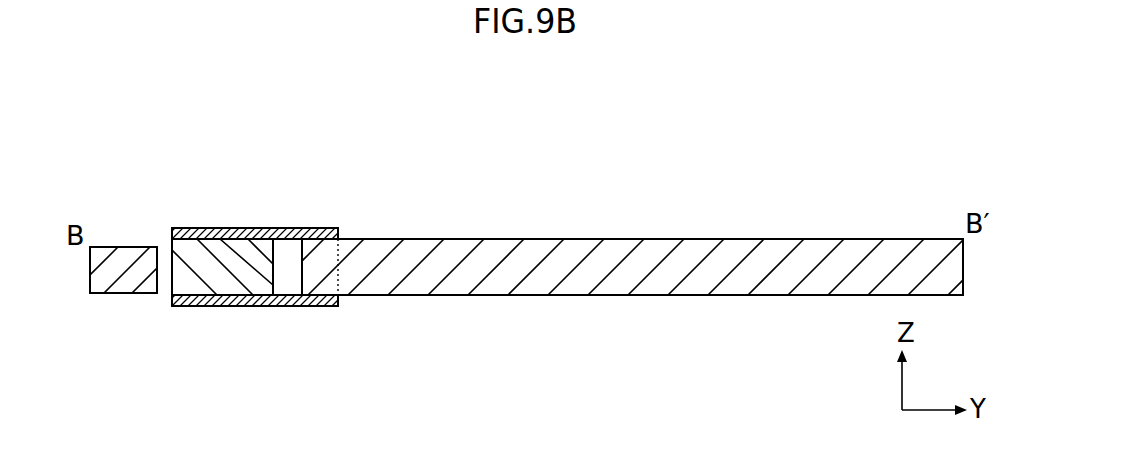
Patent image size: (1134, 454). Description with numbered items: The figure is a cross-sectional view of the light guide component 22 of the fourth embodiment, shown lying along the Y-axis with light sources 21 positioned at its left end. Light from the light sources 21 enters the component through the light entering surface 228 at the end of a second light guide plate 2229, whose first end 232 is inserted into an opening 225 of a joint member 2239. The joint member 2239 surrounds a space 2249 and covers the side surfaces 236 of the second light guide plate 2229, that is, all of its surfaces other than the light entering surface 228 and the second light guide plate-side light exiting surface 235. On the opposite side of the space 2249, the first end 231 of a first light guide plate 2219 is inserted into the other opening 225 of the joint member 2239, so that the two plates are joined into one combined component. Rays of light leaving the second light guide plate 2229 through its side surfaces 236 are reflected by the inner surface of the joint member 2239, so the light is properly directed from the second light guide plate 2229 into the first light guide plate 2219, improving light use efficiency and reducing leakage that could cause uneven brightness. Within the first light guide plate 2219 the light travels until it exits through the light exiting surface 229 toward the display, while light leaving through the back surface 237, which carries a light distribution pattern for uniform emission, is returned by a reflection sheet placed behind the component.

The light source 21 is at (117, 267).
The light guide component 22 is at (573, 190).
The opening 225 is at (171, 241).
The light entering surface 228 is at (172, 280).
The light exiting surface 229 is at (667, 237).
The first end of the first light guide plate 231 is at (318, 263).
The first end of the second light guide plate 232 is at (257, 267).
The second light guide plate-side light exiting surface 235 is at (279, 252).
The side surface 236 is at (203, 230).
The back surface 237 is at (690, 297).
The first light guide plate 2219 is at (778, 257).
The second light guide plate 2229 is at (223, 280).
The joint member 2239 is at (324, 236).
The space 2249 is at (287, 280).